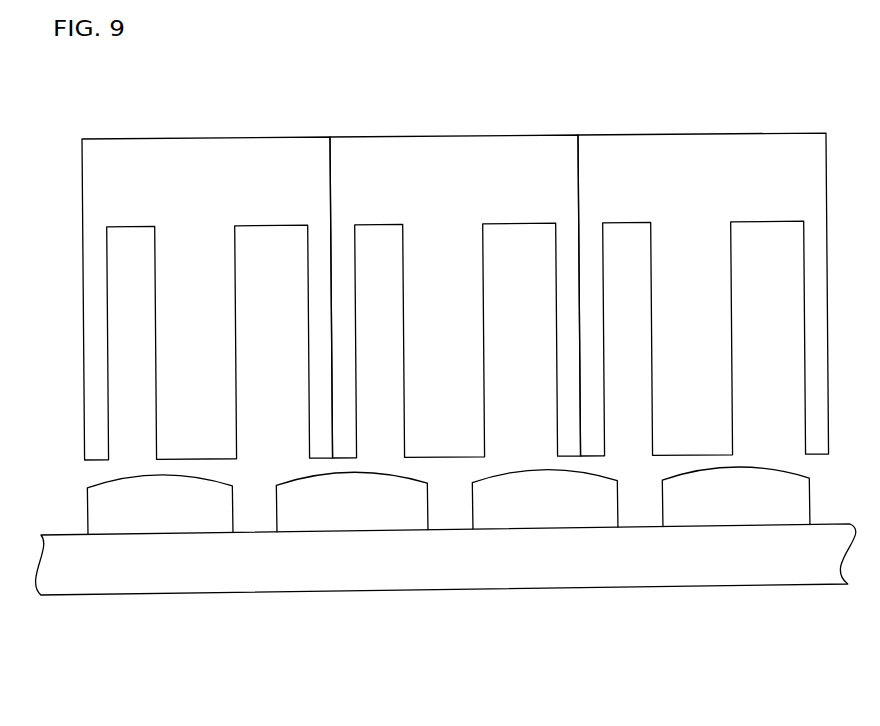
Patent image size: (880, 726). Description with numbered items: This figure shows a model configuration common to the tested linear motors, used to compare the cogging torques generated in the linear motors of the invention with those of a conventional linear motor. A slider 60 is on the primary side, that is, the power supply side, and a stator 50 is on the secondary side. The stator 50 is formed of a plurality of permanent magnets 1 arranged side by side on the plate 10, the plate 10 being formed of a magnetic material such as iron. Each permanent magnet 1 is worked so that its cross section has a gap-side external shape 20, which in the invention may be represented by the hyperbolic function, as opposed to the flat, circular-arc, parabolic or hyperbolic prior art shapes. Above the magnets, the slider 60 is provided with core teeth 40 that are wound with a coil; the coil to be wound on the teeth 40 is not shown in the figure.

The permanent magnet 1 is at (94, 512).
The plate 10 is at (145, 578).
The gap-side external shape 20 is at (315, 482).
The core teeth 40 is at (92, 282).
The stator 50 is at (733, 598).
The slider 60 is at (511, 121).